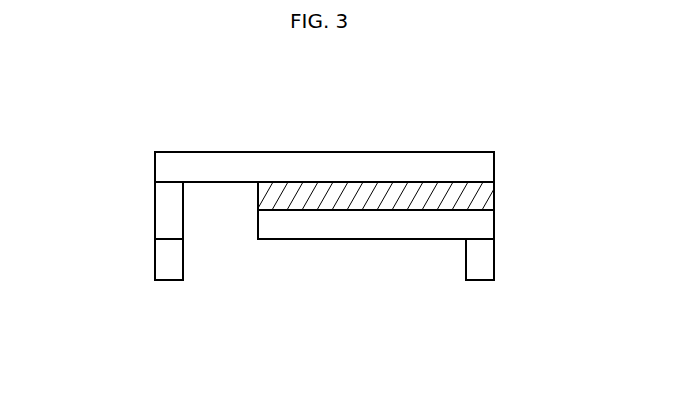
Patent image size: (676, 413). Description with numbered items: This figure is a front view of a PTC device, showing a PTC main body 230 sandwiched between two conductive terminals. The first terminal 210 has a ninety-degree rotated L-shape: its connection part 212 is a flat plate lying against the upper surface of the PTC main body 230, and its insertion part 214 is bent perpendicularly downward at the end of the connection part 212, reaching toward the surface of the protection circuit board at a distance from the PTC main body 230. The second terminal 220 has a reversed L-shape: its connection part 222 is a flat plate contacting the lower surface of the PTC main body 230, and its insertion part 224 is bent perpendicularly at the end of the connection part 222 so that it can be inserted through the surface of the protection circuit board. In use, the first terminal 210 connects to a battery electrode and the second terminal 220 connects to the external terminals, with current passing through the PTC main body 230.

The first terminal 210 is at (150, 82).
The connection part 212 is at (197, 159).
The insertion part 214 is at (162, 187).
The second terminal 220 is at (443, 334).
The connection part 222 is at (392, 232).
The insertion part 224 is at (472, 259).
The PTC main body 230 is at (487, 194).